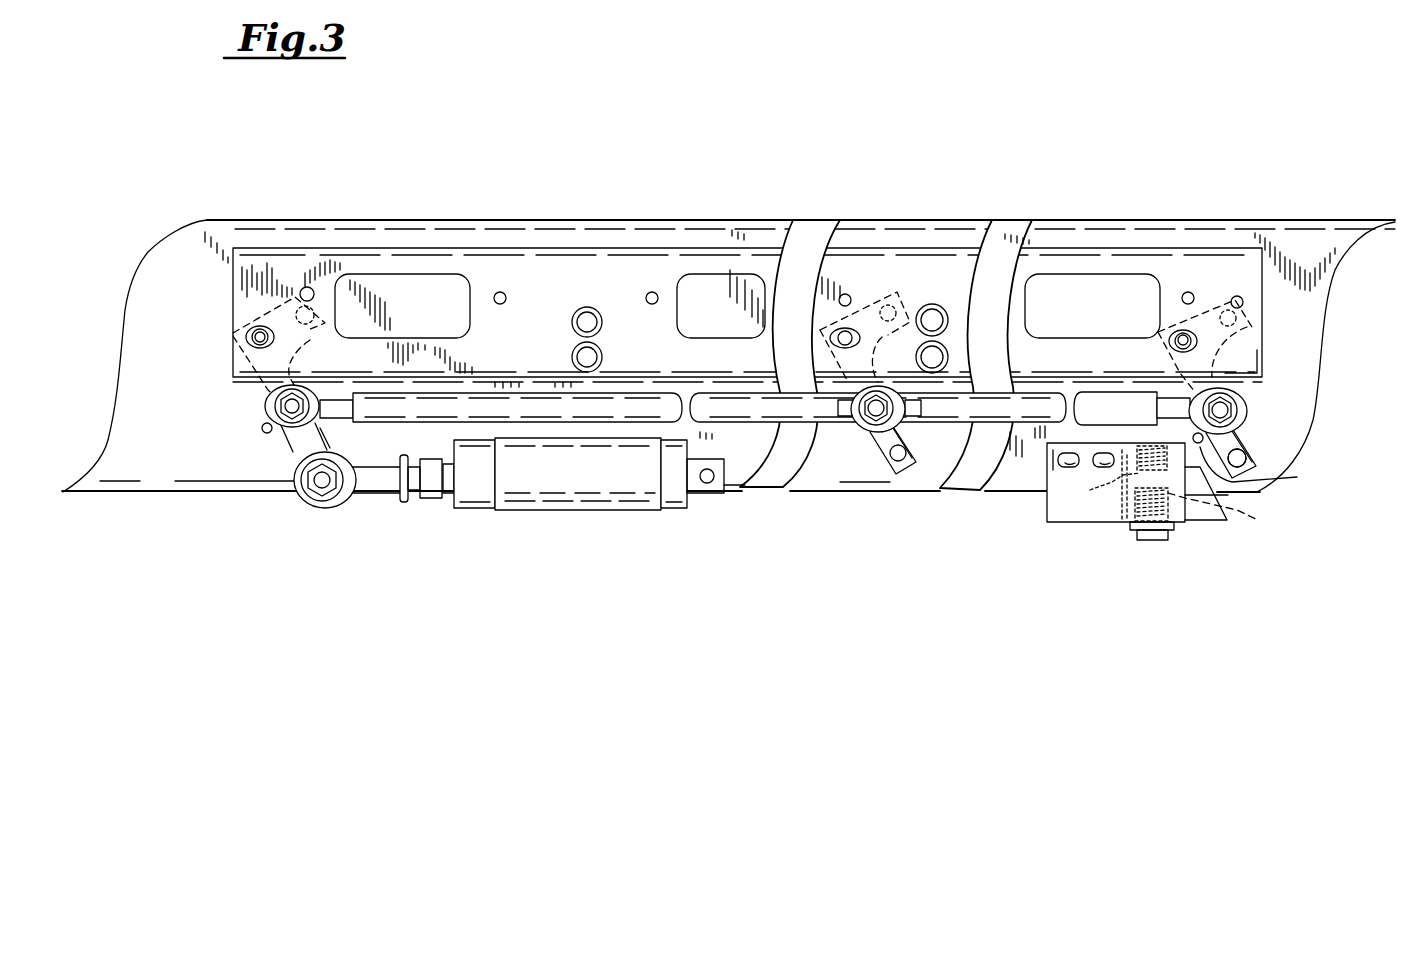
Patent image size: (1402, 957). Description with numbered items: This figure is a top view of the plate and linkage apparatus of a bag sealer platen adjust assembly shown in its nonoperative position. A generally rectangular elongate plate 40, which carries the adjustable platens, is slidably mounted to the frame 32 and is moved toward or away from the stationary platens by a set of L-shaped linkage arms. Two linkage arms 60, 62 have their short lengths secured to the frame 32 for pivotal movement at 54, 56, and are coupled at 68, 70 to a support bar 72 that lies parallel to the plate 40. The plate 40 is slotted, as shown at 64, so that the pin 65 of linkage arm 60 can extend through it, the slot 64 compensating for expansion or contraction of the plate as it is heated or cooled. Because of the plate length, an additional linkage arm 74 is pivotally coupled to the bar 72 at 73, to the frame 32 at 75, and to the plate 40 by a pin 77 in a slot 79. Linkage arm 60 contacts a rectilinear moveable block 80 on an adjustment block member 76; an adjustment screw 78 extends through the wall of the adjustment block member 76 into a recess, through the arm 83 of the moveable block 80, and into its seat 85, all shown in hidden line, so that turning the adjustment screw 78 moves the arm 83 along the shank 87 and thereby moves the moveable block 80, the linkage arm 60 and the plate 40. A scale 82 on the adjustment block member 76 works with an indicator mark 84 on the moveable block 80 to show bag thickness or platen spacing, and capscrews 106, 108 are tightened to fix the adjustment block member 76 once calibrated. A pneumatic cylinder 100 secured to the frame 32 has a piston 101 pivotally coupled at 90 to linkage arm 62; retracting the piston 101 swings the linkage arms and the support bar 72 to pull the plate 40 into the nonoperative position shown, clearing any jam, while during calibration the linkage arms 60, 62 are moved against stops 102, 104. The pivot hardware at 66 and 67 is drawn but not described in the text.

The frame 32 is at (180, 240).
The elongate plate 40 is at (593, 275).
The pivot 54 is at (1252, 327).
The pivot 56 is at (320, 335).
The linkage arm 60 is at (1240, 432).
The linkage arm 62 is at (303, 442).
The slot 64 is at (1175, 348).
The pin 65 is at (1178, 336).
The left mounting bracket 66 is at (258, 348).
The left pivot pin 67 is at (258, 333).
The coupling 68 is at (246, 332).
The coupling 70 is at (278, 404).
The support bar 72 is at (1007, 407).
The pivotal coupling 73 is at (884, 440).
The additional linkage arm 74 is at (880, 436).
The pivotal coupling 75 is at (880, 298).
The adjustment block member 76 is at (1108, 500).
The pin 77 is at (838, 338).
The adjustment screw 78 is at (1155, 543).
The slot 79 is at (919, 338).
The moveable block 80 is at (1222, 493).
The scale 82 is at (1110, 512).
The arm 83 is at (1103, 515).
The indicator mark 84 is at (1200, 510).
The seat 85 is at (1150, 447).
The shank 87 is at (1229, 515).
The pivotal coupling 90 is at (318, 483).
The pneumatic cylinder 100 is at (533, 485).
The piston 101 is at (372, 478).
The stop 102 is at (1252, 487).
The stop 104 is at (257, 432).
The capscrew 106 is at (1065, 464).
The capscrew 108 is at (1100, 464).